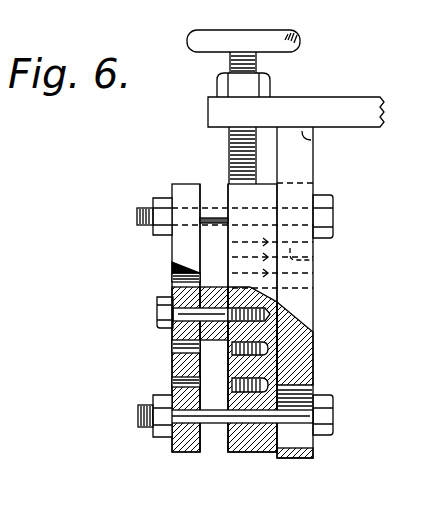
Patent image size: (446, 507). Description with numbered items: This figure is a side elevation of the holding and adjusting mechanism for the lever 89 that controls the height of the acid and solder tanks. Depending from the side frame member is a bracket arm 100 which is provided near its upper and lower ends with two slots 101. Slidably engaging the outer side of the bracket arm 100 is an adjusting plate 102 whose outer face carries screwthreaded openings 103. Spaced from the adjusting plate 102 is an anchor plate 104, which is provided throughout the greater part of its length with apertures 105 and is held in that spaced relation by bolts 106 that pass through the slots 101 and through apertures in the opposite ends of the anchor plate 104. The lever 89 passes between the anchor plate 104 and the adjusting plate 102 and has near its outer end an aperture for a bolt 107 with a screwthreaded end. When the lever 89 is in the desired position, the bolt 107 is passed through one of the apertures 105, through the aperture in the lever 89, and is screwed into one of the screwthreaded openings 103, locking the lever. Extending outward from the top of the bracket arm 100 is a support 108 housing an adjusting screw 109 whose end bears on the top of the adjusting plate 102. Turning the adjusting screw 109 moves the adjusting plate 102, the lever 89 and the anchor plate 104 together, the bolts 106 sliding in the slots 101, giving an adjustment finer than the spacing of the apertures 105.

The lever 89 is at (228, 340).
The bracket arm 100 is at (318, 139).
The slots 101 is at (313, 259).
The adjusting plate 102 is at (232, 188).
The screwthreaded openings 103 is at (262, 262).
The anchor plate 104 is at (178, 193).
The apertures 105 is at (183, 290).
The bolts 106 is at (138, 216).
The bolt 107 is at (157, 310).
The support 108 is at (220, 112).
The adjusting screw 109 is at (210, 40).